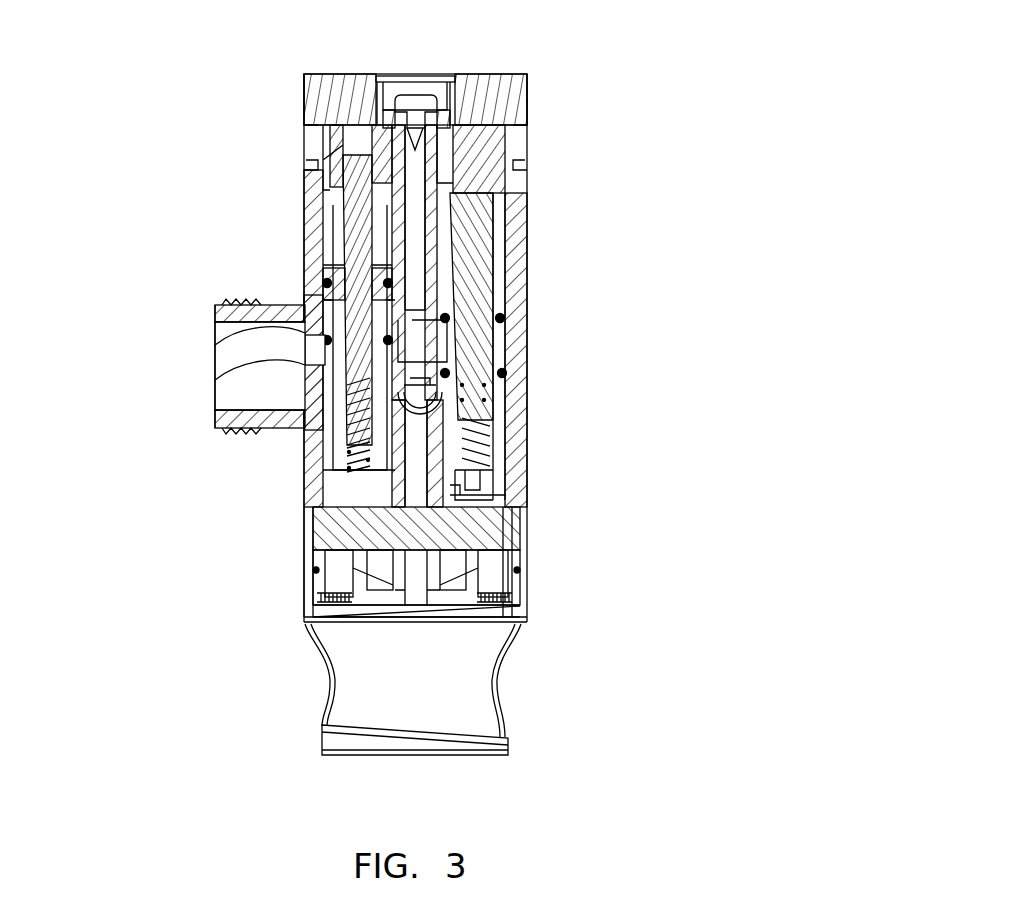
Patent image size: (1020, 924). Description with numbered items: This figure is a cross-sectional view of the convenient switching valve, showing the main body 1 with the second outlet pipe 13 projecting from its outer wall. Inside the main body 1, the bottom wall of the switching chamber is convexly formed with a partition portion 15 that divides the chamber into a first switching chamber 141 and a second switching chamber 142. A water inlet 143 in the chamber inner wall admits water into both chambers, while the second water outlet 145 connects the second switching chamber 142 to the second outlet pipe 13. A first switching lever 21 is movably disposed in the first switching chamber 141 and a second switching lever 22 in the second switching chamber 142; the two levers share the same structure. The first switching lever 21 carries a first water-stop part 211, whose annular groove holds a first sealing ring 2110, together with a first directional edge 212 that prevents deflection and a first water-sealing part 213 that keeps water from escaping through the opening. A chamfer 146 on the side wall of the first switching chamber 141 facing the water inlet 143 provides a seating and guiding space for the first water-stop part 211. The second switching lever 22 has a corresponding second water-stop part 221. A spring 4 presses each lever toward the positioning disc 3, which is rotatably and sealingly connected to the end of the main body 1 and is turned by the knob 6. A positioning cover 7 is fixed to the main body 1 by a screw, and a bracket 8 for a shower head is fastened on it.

The main body 1 is at (513, 450).
The positioning disc 3 is at (495, 160).
The spring 4 is at (525, 573).
The knob 6 is at (484, 99).
The positioning cover 7 is at (332, 560).
The bracket 8 is at (392, 690).
The second outlet pipe 13 is at (220, 413).
The partition portion 15 is at (435, 284).
The first switching lever 21 is at (485, 232).
The second switching lever 22 is at (348, 228).
The first switching chamber 141 is at (520, 495).
The second switching chamber 142 is at (352, 528).
The water inlet 143 is at (345, 484).
The second water outlet 145 is at (307, 345).
The chamfer 146 is at (310, 360).
The first water-stop part 211 is at (520, 368).
The first directional edge 212 is at (523, 464).
The first water-sealing part 213 is at (503, 318).
The second water-stop part 221 is at (322, 297).
The first sealing ring 2110 is at (500, 374).